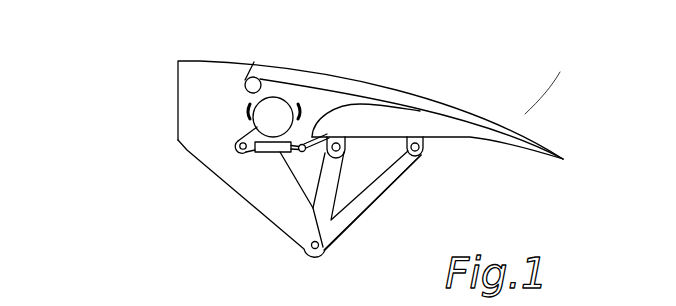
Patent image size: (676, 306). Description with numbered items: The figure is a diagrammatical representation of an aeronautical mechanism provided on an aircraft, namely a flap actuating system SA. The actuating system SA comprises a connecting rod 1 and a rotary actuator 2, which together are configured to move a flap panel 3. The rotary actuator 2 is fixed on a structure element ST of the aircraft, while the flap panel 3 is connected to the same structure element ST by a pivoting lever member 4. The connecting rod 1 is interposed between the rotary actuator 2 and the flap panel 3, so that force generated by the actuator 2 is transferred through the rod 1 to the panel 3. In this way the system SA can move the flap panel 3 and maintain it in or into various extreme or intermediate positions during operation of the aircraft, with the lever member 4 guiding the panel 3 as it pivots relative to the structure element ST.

The structure element ST is at (200, 92).
The flap actuating system SA is at (167, 181).
The connecting rod 1 is at (275, 154).
The rotary actuator 2 is at (243, 128).
The flap panel 3 is at (433, 100).
The pivoting lever member 4 is at (385, 180).